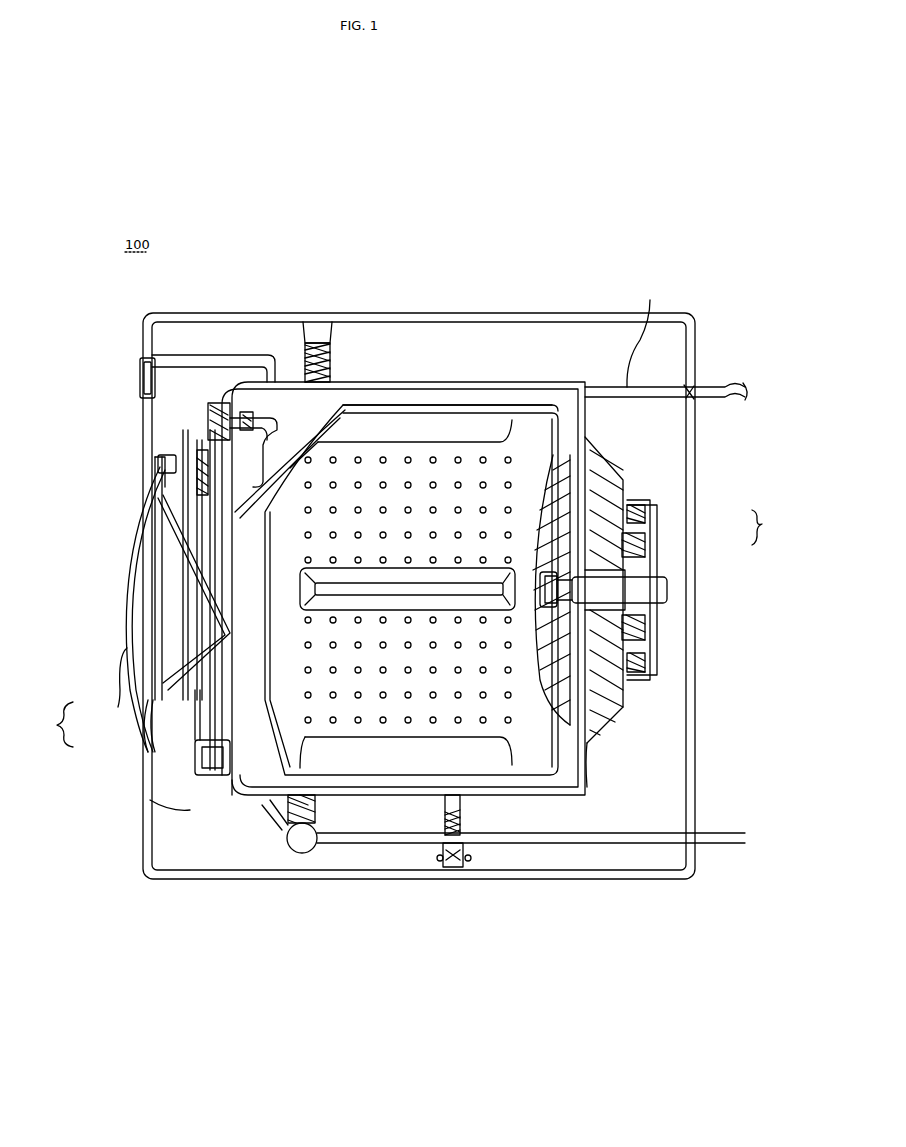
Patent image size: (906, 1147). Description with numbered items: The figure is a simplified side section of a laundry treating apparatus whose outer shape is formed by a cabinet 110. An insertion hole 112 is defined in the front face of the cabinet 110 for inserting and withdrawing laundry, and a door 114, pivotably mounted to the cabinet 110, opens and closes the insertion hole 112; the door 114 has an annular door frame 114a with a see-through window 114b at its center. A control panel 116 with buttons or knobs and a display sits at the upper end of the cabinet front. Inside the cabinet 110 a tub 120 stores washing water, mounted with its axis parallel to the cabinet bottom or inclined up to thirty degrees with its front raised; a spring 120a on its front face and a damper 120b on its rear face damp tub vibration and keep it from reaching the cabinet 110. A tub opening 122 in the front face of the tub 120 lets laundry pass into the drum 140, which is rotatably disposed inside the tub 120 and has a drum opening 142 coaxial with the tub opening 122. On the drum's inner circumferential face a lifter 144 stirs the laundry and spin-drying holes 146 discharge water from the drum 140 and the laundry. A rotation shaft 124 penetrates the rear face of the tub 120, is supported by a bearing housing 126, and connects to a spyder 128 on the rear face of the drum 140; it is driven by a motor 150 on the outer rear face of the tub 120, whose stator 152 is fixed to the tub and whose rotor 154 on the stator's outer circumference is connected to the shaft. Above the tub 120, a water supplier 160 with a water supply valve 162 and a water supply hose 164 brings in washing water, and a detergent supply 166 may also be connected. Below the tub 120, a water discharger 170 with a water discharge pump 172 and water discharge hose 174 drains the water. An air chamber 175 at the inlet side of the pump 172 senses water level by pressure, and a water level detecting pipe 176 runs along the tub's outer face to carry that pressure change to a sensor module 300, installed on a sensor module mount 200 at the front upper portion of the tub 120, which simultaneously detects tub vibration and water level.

The cabinet 110 is at (684, 294).
The insertion hole 112 is at (150, 510).
The door 114 is at (51, 724).
The door frame 114a is at (103, 683).
The see-through window 114b is at (157, 715).
The control panel 116 is at (140, 375).
The tub 120 is at (400, 385).
The spring 120a is at (330, 373).
The damper 120b is at (467, 825).
The tub opening 122 is at (213, 650).
The rotation shaft 124 is at (660, 590).
The bearing housing 126 is at (600, 742).
The spyder 128 is at (628, 680).
The drum 140 is at (433, 407).
The drum opening 142 is at (217, 630).
The lifter 144 is at (492, 577).
The spin-drying hole 146 is at (458, 457).
The motor 150 is at (707, 590).
The stator 152 is at (660, 517).
The rotor 154 is at (642, 512).
The water supplier 160 is at (656, 386).
The water supply valve 162 is at (692, 398).
The water supply hose 164 is at (650, 300).
The detergent supply 166 is at (180, 347).
The water discharger 170 is at (292, 858).
The water discharge pump 172 is at (303, 854).
The water discharge hose 174 is at (350, 843).
The air chamber 175 is at (287, 837).
The water level detecting pipe 176 is at (155, 483).
The sensor module mount 200 is at (208, 428).
The sensor module 300 is at (208, 412).